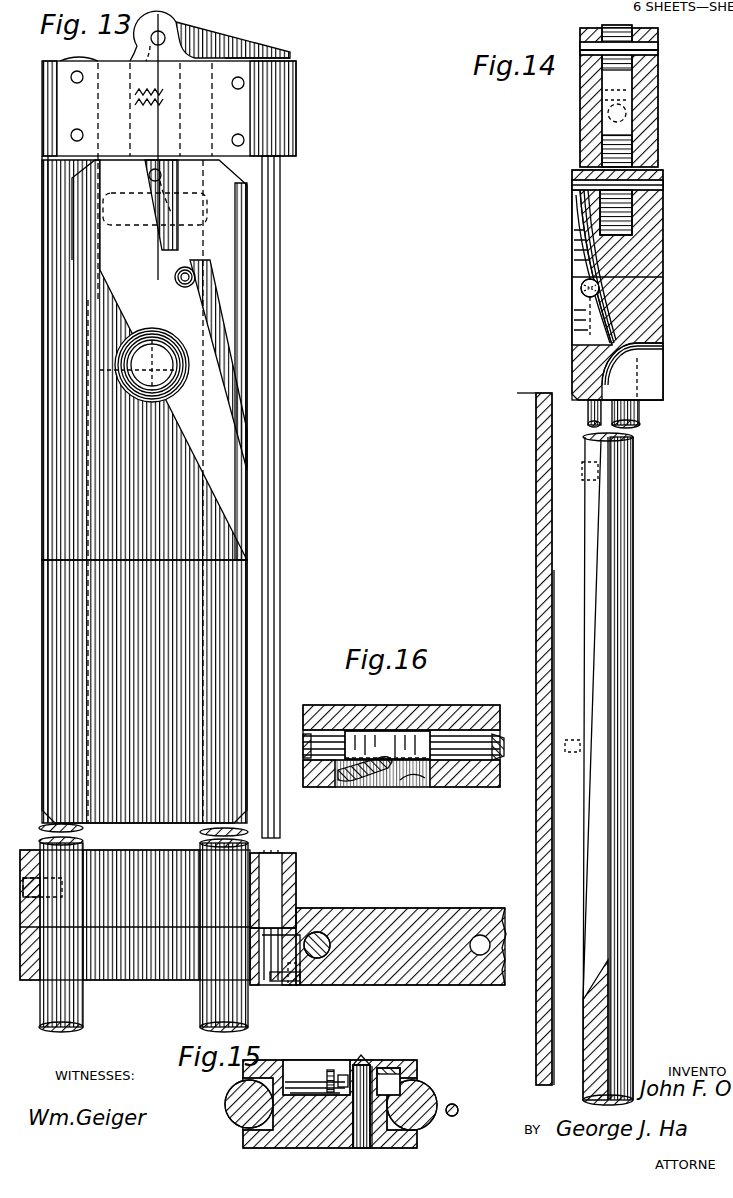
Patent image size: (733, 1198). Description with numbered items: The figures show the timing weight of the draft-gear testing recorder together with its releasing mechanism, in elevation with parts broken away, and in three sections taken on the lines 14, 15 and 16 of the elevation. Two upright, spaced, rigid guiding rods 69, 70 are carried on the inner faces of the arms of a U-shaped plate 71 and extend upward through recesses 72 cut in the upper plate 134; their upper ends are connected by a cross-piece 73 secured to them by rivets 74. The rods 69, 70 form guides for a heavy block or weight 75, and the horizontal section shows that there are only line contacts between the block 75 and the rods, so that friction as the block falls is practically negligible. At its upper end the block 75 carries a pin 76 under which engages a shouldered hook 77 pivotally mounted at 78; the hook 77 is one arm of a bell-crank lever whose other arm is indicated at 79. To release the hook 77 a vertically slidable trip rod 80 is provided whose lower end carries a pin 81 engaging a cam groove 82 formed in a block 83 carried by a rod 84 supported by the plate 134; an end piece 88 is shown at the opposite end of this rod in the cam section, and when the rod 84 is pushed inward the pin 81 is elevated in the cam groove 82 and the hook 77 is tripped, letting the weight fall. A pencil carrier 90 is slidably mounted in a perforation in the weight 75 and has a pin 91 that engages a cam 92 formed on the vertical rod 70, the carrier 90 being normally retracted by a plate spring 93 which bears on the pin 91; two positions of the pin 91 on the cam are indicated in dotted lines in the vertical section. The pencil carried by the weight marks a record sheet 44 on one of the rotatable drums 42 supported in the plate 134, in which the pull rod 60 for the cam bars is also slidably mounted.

In FIG. 13, the section line 14— 14 is at (166, 16).
In FIG. 13, the section line 15— 15 is at (40, 255).
In FIG. 13, the section line 16— 16 is at (313, 905).
In FIG. 14, the rotatable drum 42 is at (537, 500).
In FIG. 14, the record sheet 44 is at (549, 583).
In FIG. 13, the pull rod 60 is at (482, 934).
In FIG. 13, the guiding rod 69 is at (47, 925).
In FIG. 15, the guiding rod 69 is at (232, 1112).
In FIG. 13, the guiding rod 70 is at (210, 838).
In FIG. 14, the guiding rod 70 is at (624, 553).
In FIG. 15, the guiding rod 70 is at (432, 1090).
In FIG. 13, the U-shaped plate 71 is at (296, 856).
In FIG. 13, the recess 72 is at (156, 975).
In FIG. 13, the cross-piece 73 is at (298, 96).
In FIG. 14, the cross-piece 73 is at (660, 124).
In FIG. 13, the rivet 74 is at (77, 83).
In FIG. 13, the block or weight 75 is at (144, 489).
In FIG. 14, the block or weight 75 is at (664, 325).
In FIG. 15, the block or weight 75 is at (318, 1150).
In FIG. 13, the pin 76 is at (149, 176).
In FIG. 14, the pin 76 is at (572, 184).
In FIG. 13, the shouldered hook 77 is at (170, 193).
In FIG. 14, the shouldered hook 77 is at (625, 205).
In FIG. 13, the pivot 78 is at (168, 40).
In FIG. 14, the pivot 78 is at (660, 50).
In FIG. 13, the bell-crank arm 79 is at (262, 47).
In FIG. 13, the trip rod 80 is at (283, 437).
In FIG. 15, the trip rod 80 is at (460, 1111).
In FIG. 13, the pin 81 is at (283, 982).
In FIG. 16, the pin 81 is at (388, 778).
In FIG. 13, the cam groove 82 is at (299, 983).
In FIG. 16, the cam groove 82 is at (425, 780).
In FIG. 13, the block 83 is at (305, 985).
In FIG. 16, the block 83 is at (400, 738).
In FIG. 13, the rod 84 is at (327, 937).
In FIG. 16, the rod 84 is at (500, 758).
In FIG. 16, the shaft pin 88 is at (306, 752).
In FIG. 13, the pencil carrier 90 is at (186, 267).
In FIG. 14, the pencil carrier 90 is at (664, 290).
In FIG. 15, the pencil carrier 90 is at (363, 1150).
In FIG. 14, the pin 91 is at (584, 480).
In FIG. 15, the pin 91 is at (395, 1068).
In FIG. 14, the cam 92 is at (598, 462).
In FIG. 14, the plate spring 93 is at (574, 254).
In FIG. 15, the plate spring 93 is at (380, 1065).
In FIG. 13, the upper plate 134 is at (406, 908).
In FIG. 16, the upper plate 134 is at (478, 693).